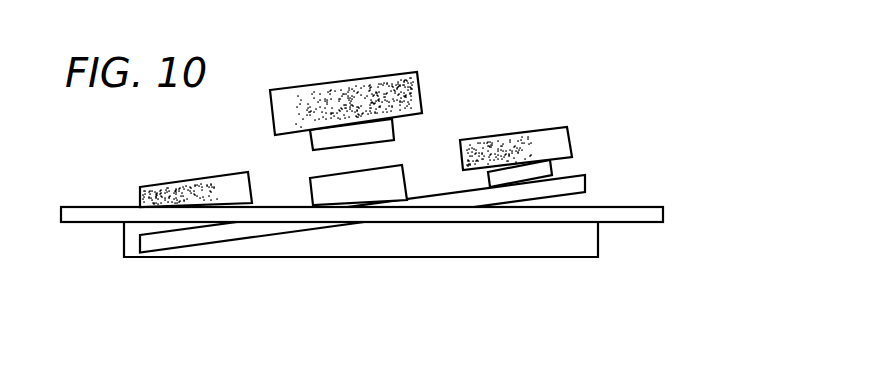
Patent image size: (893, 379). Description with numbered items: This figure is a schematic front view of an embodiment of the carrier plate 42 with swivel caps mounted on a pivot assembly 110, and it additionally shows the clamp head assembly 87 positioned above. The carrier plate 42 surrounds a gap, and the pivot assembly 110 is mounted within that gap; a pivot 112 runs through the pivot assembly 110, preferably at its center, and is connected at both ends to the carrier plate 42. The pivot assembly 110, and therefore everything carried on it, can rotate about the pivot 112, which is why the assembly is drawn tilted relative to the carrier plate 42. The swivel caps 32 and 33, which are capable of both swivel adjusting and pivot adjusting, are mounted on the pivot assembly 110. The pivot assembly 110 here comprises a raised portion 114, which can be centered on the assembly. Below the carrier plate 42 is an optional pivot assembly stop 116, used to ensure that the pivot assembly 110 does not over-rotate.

The carrier plate 42 is at (98, 207).
The swivel cap 32 is at (208, 192).
The clamp head assembly 87 is at (408, 90).
The swivel cap 33 is at (525, 145).
The pivot assembly 110 is at (578, 183).
The raised portion 114 is at (362, 188).
The pivot 112 is at (465, 217).
The pivot assembly stop 116 is at (545, 257).